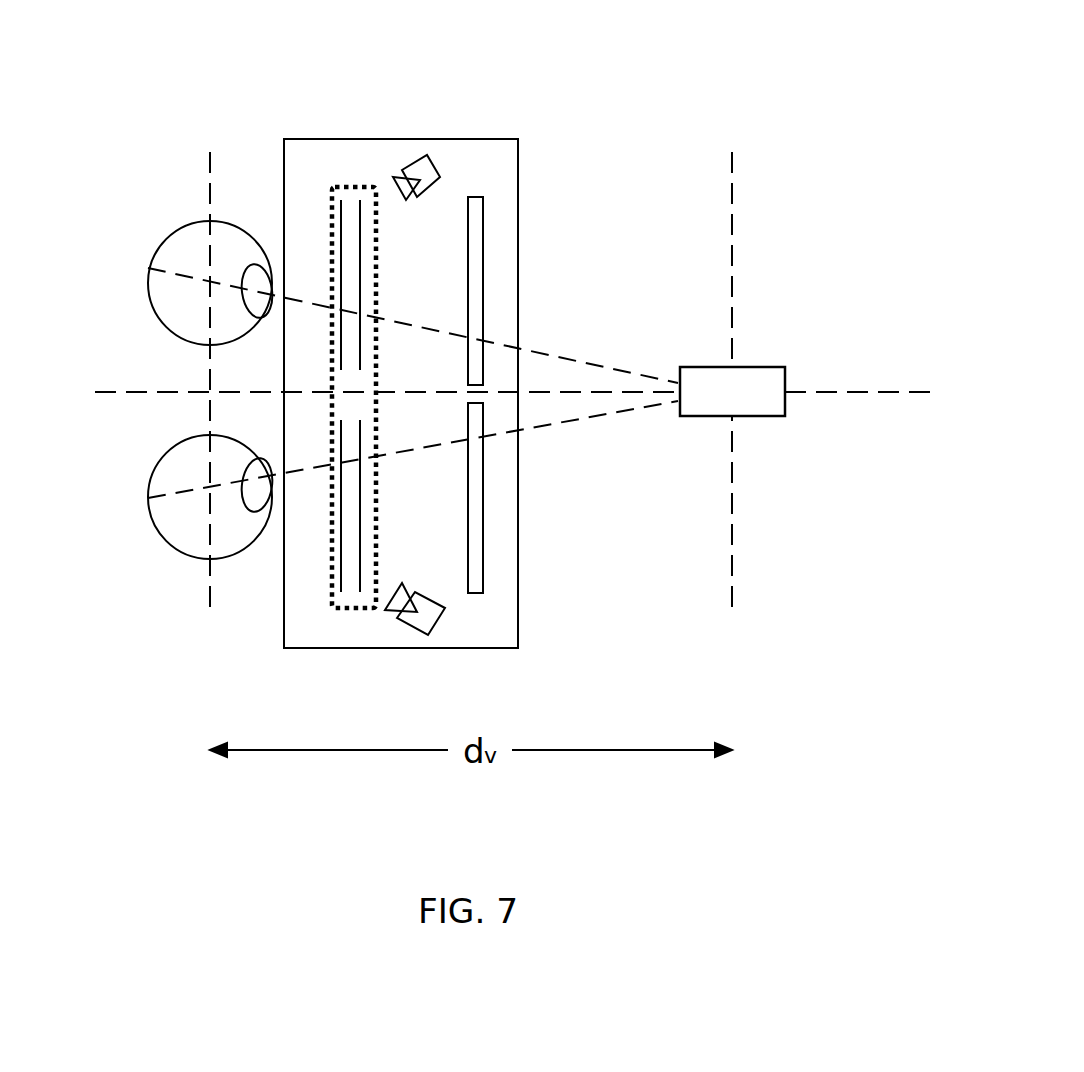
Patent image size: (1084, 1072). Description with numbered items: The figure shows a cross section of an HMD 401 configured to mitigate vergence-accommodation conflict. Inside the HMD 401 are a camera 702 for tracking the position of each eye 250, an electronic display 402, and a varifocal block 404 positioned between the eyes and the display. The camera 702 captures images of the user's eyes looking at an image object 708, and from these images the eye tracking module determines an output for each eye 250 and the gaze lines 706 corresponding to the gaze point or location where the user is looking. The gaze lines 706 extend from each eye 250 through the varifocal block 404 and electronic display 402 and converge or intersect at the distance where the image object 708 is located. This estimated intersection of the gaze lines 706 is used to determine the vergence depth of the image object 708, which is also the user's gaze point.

The eye 250 is at (148, 284).
The HMD 401 is at (499, 139).
The electronic display 402 is at (595, 610).
The varifocal block 404 is at (332, 189).
The camera 702 is at (381, 672).
The gaze lines 706 is at (644, 410).
The image object 708 is at (758, 367).